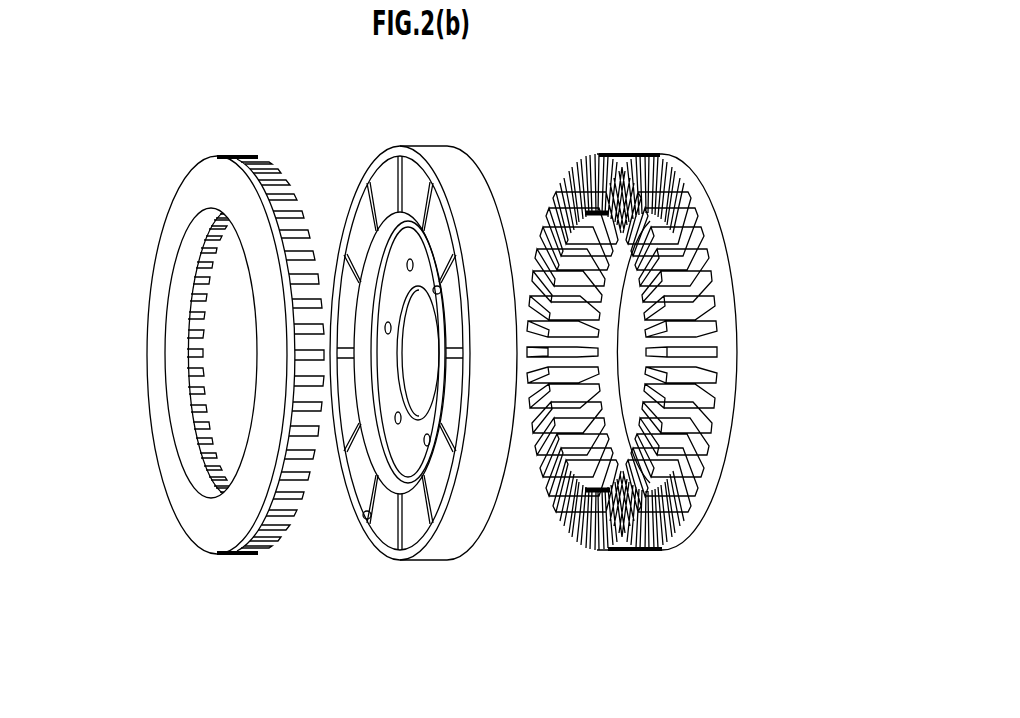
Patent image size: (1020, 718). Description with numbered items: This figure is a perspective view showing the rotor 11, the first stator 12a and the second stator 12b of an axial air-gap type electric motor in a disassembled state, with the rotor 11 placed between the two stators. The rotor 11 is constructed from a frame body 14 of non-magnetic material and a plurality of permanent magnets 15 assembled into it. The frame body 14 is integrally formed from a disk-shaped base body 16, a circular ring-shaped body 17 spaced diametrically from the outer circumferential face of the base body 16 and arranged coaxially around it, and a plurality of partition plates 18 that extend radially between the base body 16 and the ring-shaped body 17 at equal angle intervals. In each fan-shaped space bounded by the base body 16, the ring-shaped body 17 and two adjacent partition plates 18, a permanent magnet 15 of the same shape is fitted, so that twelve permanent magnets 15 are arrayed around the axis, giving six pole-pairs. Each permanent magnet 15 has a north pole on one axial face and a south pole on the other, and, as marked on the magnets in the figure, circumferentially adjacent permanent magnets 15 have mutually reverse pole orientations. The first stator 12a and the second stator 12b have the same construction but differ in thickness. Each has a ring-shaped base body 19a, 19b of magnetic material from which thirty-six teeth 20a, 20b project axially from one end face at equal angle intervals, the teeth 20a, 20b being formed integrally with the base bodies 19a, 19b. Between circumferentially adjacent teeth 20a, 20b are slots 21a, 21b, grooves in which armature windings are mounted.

The rotor 11 is at (421, 351).
The first stator 12a is at (671, 321).
The second stator 12b is at (216, 321).
The frame body 14 is at (400, 566).
The permanent magnet 15 is at (399, 152).
The base body 16 is at (376, 476).
The ring-shaped body 17 is at (484, 500).
The partition plate 18 is at (374, 512).
The base body of first stator 19a is at (738, 336).
The base body of second stator 19b is at (182, 513).
The teeth of first stator 20a is at (688, 206).
The teeth of second stator 20b is at (289, 190).
The slot of first stator 21a is at (700, 290).
The slot of second stator 21b is at (185, 328).